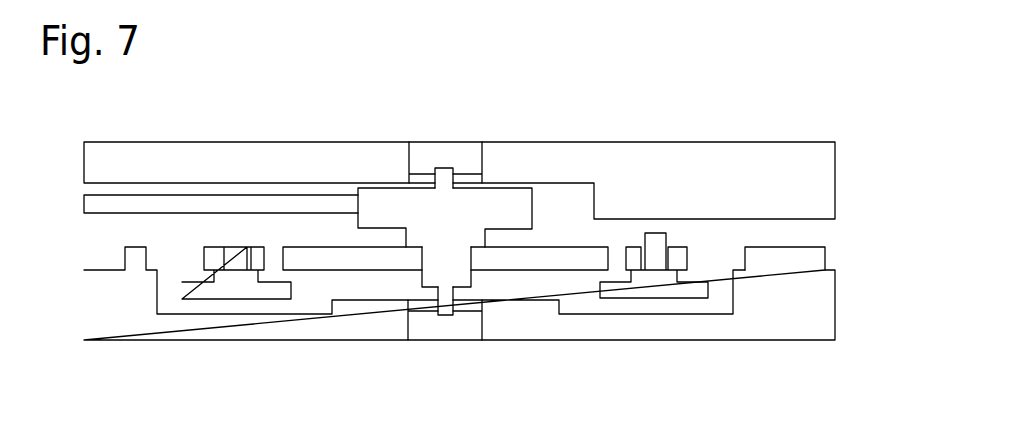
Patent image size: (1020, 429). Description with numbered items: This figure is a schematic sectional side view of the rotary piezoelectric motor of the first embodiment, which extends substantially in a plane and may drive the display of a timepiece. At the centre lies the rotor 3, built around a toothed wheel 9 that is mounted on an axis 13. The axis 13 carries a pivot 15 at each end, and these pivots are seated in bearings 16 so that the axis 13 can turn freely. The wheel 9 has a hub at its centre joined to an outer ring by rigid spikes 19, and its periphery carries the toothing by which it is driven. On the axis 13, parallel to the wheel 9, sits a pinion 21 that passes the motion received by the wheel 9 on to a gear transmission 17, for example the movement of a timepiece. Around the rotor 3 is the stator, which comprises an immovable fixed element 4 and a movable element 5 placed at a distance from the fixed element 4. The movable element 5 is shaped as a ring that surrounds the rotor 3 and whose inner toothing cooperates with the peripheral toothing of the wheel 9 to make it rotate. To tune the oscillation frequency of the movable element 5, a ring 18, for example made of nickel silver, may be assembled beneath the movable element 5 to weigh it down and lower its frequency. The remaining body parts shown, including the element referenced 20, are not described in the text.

The rotor 3 is at (311, 248).
The fixed element 4 is at (828, 249).
The movable element 5 is at (208, 263).
The toothed wheel 9 is at (553, 257).
The axis 13 is at (469, 238).
The pivot 15 is at (448, 176).
The bearing 16 is at (428, 155).
The gear transmission 17 is at (203, 202).
The ring 18 is at (662, 288).
The rigid spikes 19 is at (714, 192).
The lower body 20 is at (805, 301).
The pinion 21 is at (492, 205).